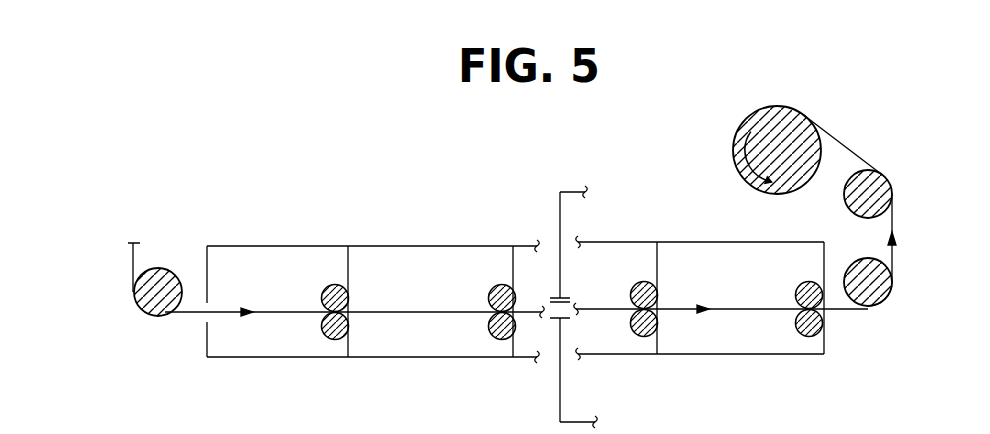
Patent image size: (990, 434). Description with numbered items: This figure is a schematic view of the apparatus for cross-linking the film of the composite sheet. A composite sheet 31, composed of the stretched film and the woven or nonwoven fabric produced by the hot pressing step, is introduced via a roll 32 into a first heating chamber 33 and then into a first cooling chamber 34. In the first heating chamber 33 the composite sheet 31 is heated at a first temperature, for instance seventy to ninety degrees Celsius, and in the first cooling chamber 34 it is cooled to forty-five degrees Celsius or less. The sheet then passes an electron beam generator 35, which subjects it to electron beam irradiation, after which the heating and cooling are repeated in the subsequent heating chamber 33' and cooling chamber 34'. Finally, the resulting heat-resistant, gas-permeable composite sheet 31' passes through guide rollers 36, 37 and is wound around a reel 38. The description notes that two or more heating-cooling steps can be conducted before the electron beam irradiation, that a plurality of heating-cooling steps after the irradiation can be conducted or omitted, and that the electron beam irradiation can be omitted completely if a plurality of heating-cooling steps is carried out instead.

The composite sheet 31 is at (353, 340).
The heat-resistant, gas-permeable composite sheet 31' is at (726, 335).
The roll 32 is at (142, 303).
The first heating chamber 33 is at (278, 331).
The first cooling chamber 34 is at (443, 327).
The electron beam generator 35 is at (557, 210).
The subsequent heating chamber 33' is at (617, 322).
The subsequent cooling chamber 34' is at (740, 325).
The guide roller 36 is at (883, 293).
The guide roller 37 is at (888, 177).
The reel 38 is at (797, 107).